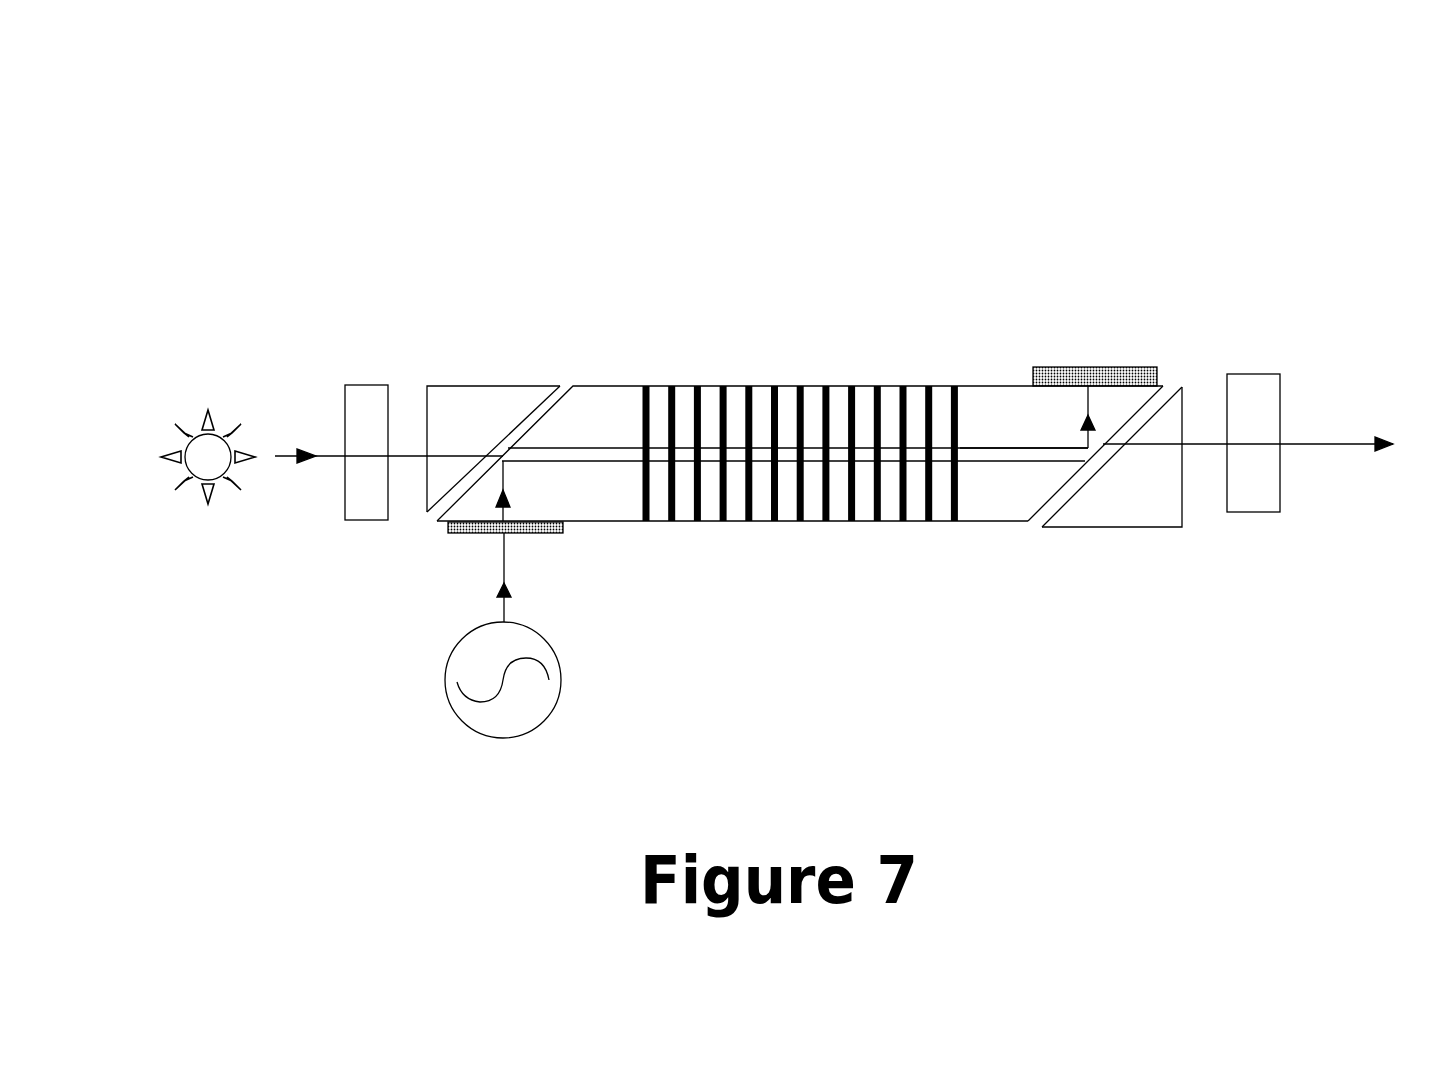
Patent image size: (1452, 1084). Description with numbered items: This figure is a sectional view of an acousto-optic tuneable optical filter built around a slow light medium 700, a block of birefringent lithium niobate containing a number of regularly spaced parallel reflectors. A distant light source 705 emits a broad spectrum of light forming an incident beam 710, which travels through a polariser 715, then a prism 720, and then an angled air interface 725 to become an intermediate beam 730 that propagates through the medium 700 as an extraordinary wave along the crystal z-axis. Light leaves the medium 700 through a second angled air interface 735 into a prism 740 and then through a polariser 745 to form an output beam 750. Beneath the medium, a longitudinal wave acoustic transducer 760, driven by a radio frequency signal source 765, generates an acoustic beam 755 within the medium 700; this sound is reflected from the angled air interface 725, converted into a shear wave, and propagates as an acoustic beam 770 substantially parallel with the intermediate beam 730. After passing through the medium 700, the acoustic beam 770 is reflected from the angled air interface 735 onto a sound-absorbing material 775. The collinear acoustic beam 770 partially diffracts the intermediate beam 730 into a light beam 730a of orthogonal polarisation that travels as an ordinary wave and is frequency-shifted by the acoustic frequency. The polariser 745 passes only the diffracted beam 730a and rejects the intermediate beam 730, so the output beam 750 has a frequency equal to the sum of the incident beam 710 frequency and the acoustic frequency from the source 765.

The slow light medium 700 is at (784, 373).
The light source 705 is at (206, 393).
The incident beam 710 is at (323, 456).
The polariser 715 is at (365, 385).
The prism 720 is at (478, 386).
The angled air interface 725 is at (528, 419).
The intermediate beam 730 is at (592, 448).
The diffracted light beam 730a is at (998, 448).
The angled air interface 735 is at (1071, 492).
The prism 740 is at (1142, 527).
The polariser 745 is at (1257, 374).
The output beam 750 is at (1313, 445).
The acoustic beam 755 is at (613, 461).
The longitudinal wave acoustic transducer 760 is at (475, 533).
The radio frequency signal source 765 is at (500, 737).
The acoustic beam 770 is at (507, 482).
The sound-absorbing material 775 is at (1070, 367).